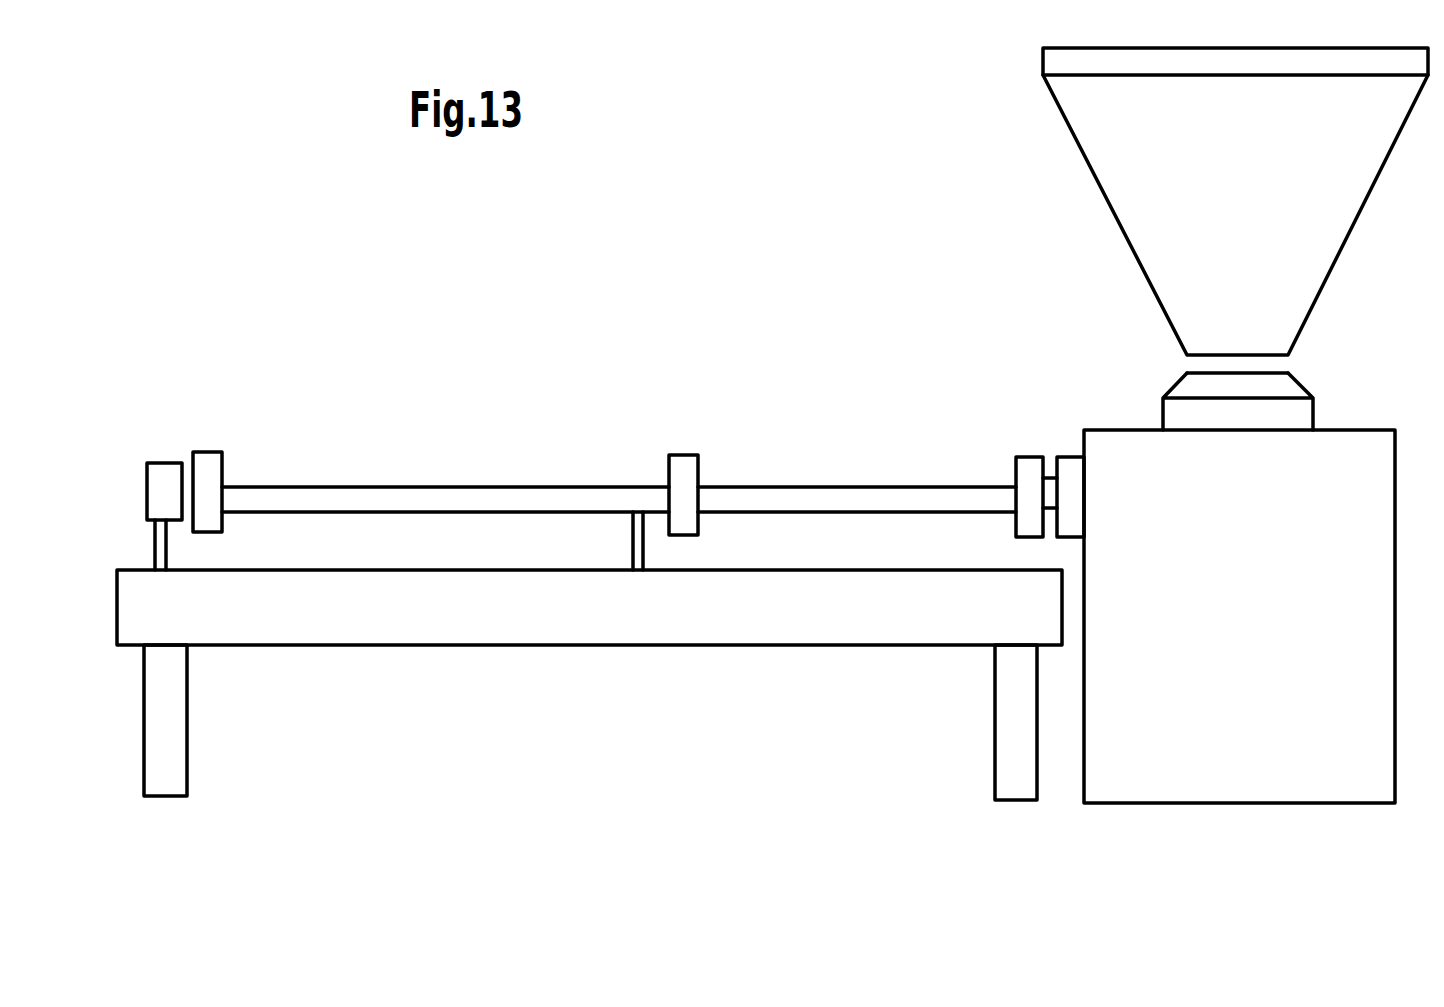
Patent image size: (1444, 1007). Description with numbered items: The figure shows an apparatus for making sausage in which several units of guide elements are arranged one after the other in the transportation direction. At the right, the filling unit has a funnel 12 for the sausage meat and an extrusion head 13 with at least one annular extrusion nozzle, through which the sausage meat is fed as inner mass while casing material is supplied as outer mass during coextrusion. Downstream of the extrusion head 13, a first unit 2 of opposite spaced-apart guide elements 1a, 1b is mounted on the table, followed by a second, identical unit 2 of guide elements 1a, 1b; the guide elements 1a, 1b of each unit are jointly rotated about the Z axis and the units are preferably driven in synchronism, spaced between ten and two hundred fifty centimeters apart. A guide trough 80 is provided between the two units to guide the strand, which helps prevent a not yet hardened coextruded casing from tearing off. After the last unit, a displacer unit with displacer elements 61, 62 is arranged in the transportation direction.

The funnel 12 is at (1343, 210).
The extrusion head 13 is at (1032, 456).
The guide trough 80 is at (533, 484).
The guide element 1a is at (464, 455).
The guide element 1b is at (464, 455).
The guide element unit 2 is at (208, 451).
The displacer element 61 is at (169, 456).
The displacer element 62 is at (163, 462).